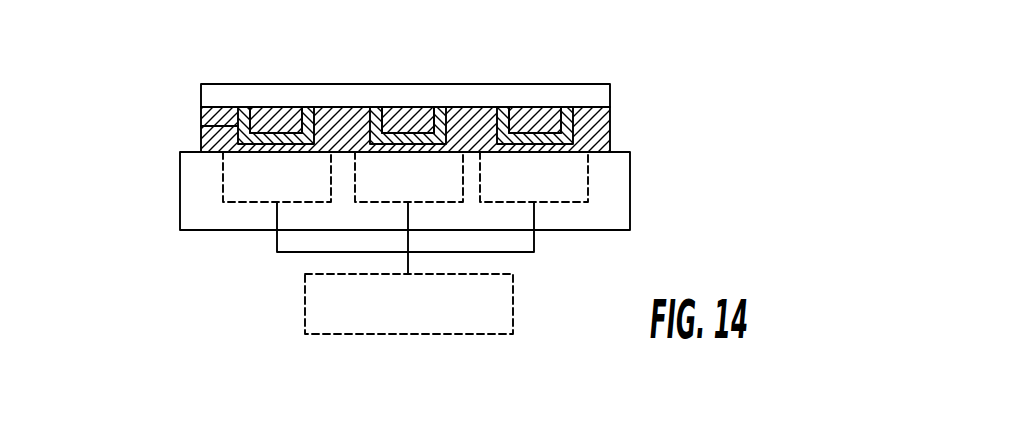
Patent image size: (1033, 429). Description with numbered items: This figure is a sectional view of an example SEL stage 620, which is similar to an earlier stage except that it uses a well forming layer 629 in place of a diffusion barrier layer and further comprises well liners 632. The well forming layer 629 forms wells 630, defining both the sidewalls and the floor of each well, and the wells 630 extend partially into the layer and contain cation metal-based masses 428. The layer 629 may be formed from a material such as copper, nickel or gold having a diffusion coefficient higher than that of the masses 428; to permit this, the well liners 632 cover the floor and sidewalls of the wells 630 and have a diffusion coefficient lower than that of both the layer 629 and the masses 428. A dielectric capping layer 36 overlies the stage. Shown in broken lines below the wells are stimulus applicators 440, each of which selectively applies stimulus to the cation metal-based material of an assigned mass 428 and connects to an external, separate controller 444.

The dielectric capping layer 36 is at (201, 98).
The cation metal-based masses 428 is at (525, 108).
The stimulus applicators 440 is at (370, 203).
The controller 444 is at (513, 286).
The SEL stage 620 is at (106, 143).
The well forming layer 629 is at (611, 113).
The wells 630 is at (201, 126).
The well liners 632 is at (577, 122).